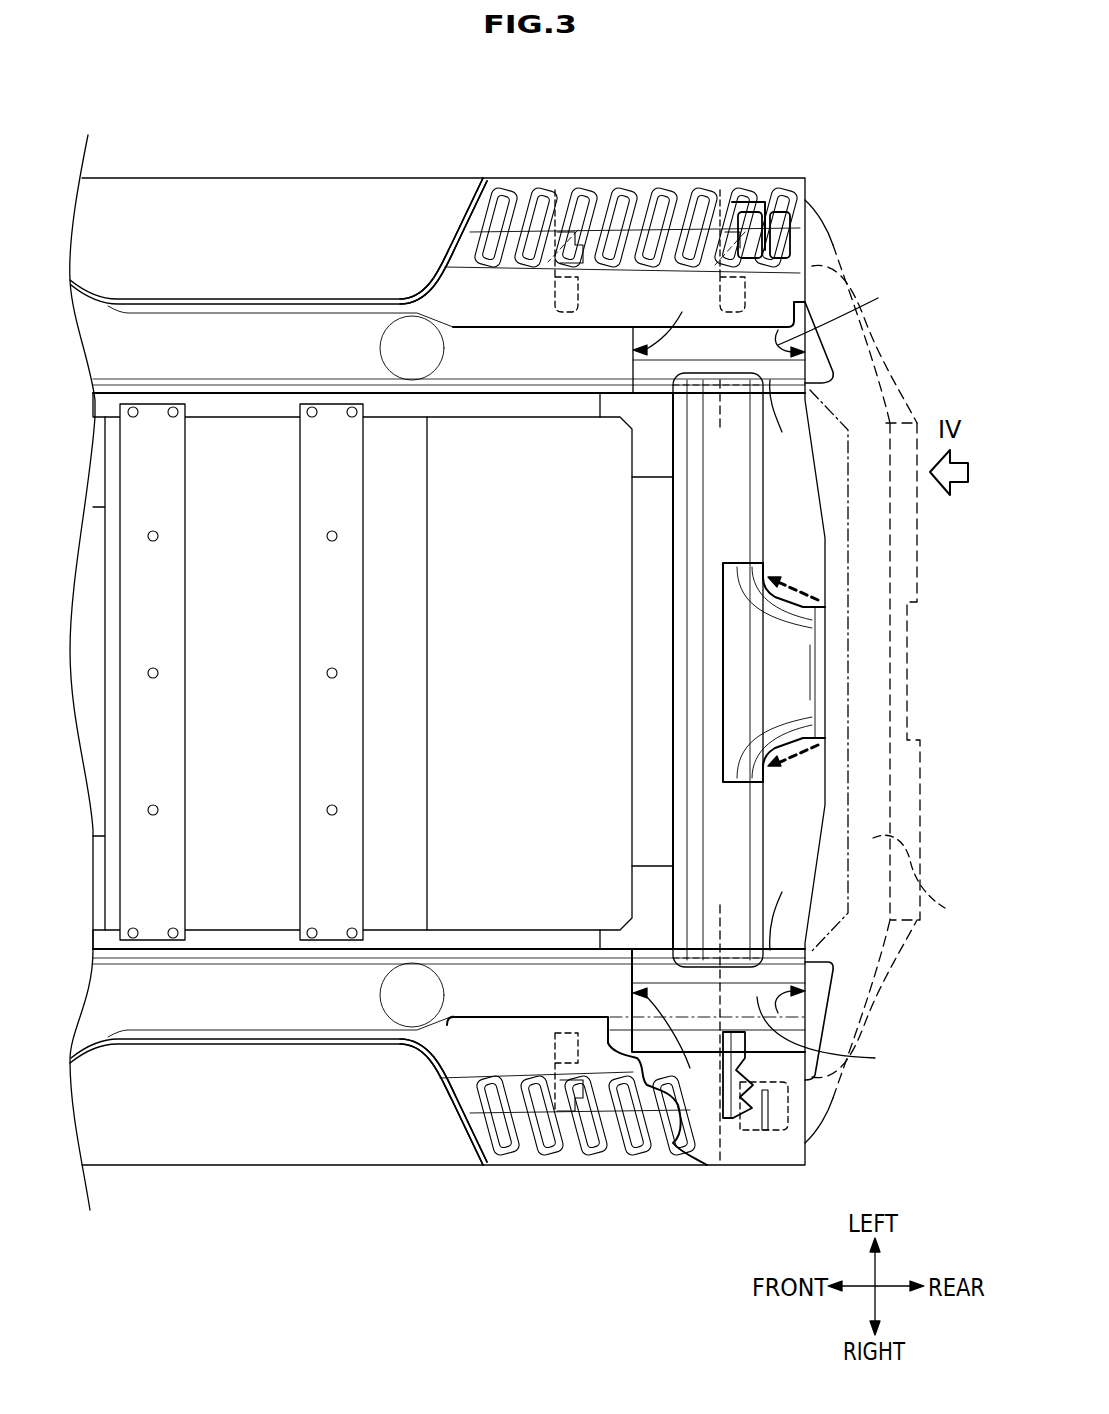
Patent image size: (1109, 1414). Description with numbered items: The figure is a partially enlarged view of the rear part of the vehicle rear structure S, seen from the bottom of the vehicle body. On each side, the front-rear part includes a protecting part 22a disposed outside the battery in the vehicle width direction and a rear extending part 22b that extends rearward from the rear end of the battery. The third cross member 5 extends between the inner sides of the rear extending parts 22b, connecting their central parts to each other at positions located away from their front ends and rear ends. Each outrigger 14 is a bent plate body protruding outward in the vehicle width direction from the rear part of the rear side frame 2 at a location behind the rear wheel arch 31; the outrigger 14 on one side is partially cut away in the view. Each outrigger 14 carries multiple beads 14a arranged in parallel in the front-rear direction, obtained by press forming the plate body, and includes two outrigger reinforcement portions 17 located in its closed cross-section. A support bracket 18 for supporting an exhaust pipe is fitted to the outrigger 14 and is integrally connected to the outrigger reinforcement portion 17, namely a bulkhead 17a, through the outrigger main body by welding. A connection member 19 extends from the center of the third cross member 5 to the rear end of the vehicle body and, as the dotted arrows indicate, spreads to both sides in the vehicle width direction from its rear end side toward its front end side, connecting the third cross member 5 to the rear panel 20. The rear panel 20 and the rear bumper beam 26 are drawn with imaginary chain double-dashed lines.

The rear side frame 2 is at (447, 672).
The protecting part 22a is at (272, 335).
The rear extending part 22b is at (762, 350).
The rear wheel arch 31 is at (447, 242).
The outrigger 14 is at (657, 178).
The bead 14a is at (637, 190).
The outrigger reinforcement portion 17 is at (717, 190).
The bulkhead 17a is at (754, 660).
The support bracket 18 is at (778, 215).
The third cross member 5 is at (705, 637).
The connection member 19 is at (780, 670).
The rear panel 20 is at (890, 955).
The rear bumper beam 26 is at (929, 881).
The vehicle rear structure S is at (253, 98).